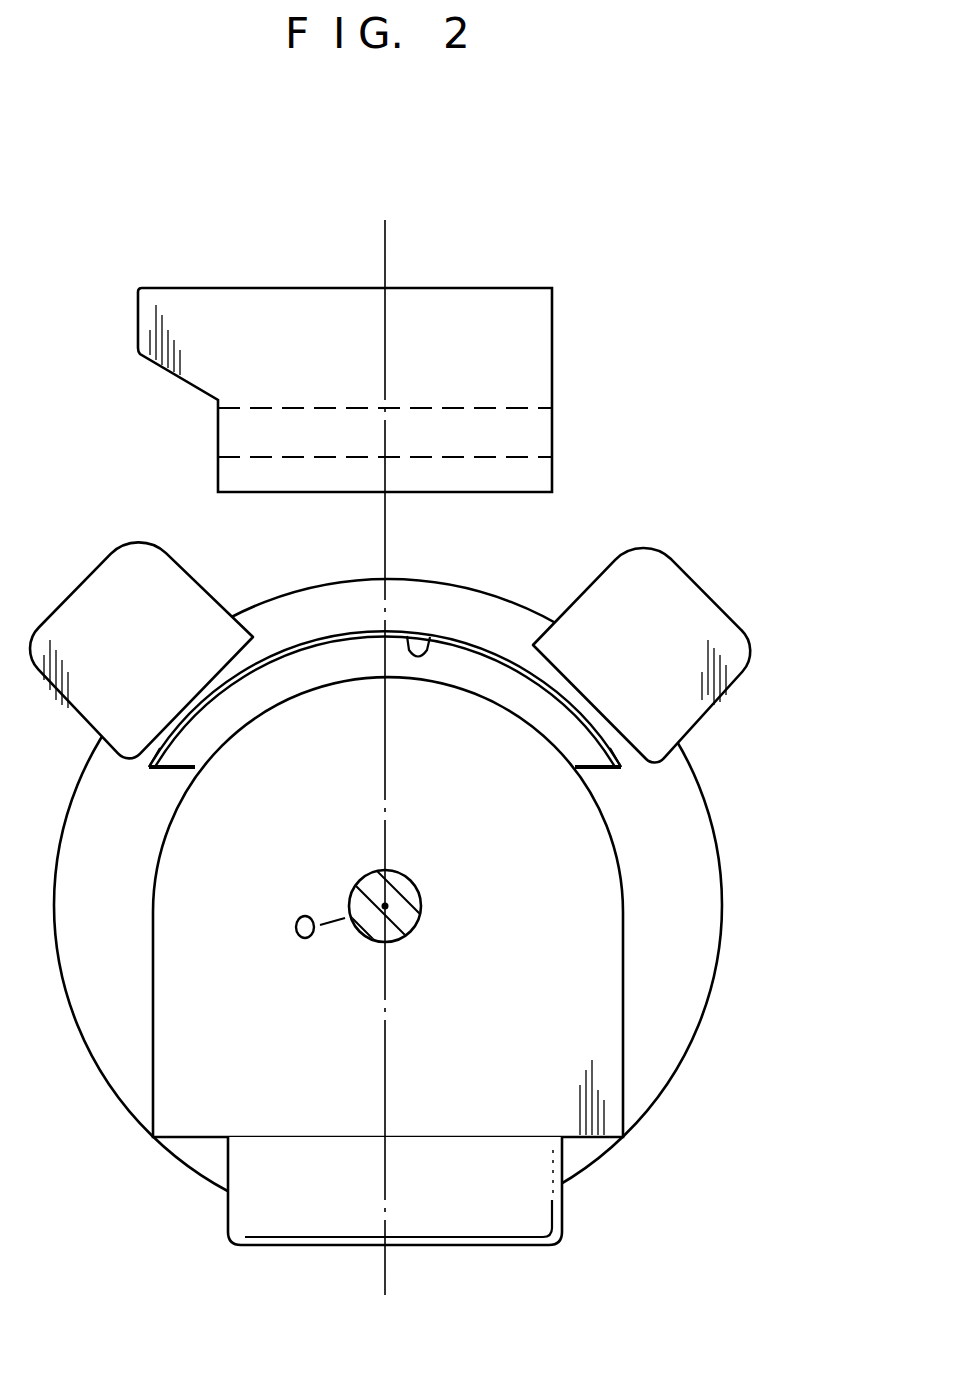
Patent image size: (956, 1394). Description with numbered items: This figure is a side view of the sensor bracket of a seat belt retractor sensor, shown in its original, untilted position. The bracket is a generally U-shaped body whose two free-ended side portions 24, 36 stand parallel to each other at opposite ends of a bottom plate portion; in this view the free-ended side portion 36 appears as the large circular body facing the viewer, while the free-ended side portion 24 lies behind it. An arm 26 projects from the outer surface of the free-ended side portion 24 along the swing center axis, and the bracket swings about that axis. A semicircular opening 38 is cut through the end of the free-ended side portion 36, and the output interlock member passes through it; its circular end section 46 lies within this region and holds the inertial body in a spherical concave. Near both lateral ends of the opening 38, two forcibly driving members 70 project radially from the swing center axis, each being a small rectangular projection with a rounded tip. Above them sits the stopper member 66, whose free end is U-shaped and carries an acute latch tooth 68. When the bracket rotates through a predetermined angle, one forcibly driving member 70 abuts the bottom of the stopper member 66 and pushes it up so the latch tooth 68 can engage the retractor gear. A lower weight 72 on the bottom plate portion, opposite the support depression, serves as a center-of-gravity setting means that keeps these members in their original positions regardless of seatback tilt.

The free-ended side portion 24 is at (588, 905).
The arm 26 is at (415, 911).
The free-ended side portion 36 is at (673, 818).
The semicircular opening 38 is at (437, 637).
The circular end section 46 is at (473, 675).
The stopper member 66 is at (500, 405).
The latch tooth 68 is at (527, 323).
The forcibly driving members 70 is at (112, 575).
The lower weight 72 is at (525, 1207).